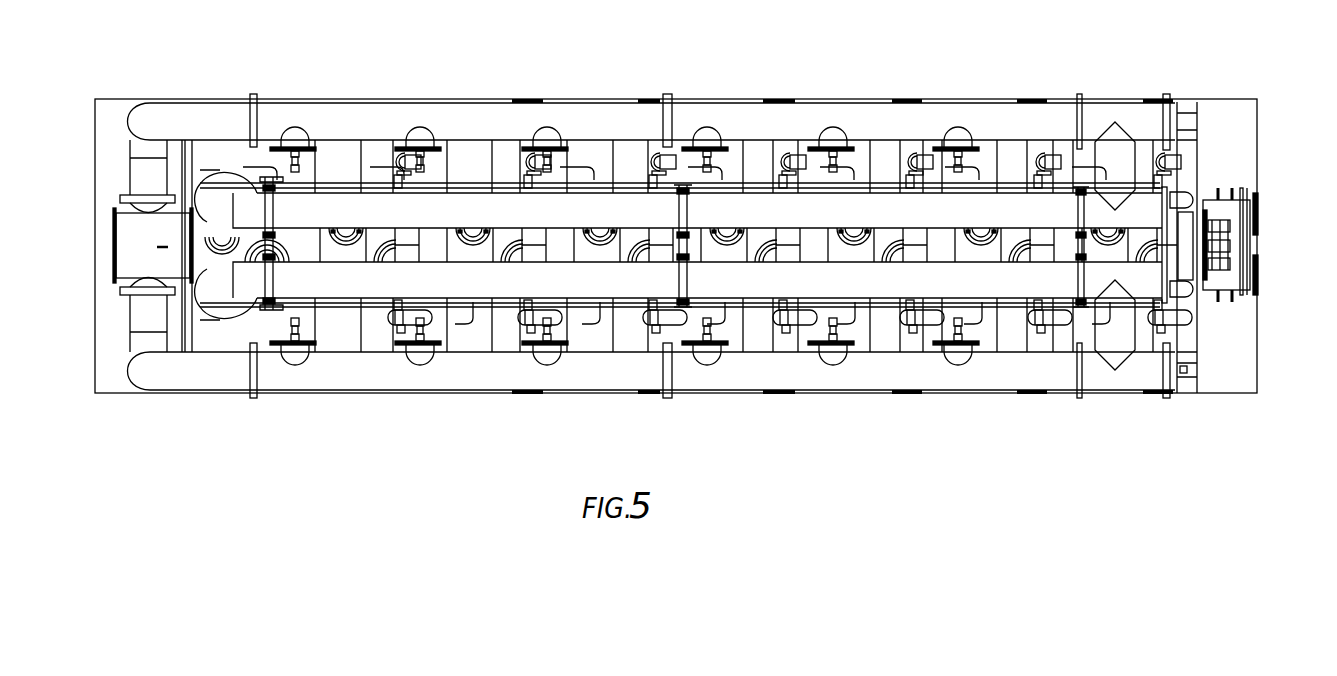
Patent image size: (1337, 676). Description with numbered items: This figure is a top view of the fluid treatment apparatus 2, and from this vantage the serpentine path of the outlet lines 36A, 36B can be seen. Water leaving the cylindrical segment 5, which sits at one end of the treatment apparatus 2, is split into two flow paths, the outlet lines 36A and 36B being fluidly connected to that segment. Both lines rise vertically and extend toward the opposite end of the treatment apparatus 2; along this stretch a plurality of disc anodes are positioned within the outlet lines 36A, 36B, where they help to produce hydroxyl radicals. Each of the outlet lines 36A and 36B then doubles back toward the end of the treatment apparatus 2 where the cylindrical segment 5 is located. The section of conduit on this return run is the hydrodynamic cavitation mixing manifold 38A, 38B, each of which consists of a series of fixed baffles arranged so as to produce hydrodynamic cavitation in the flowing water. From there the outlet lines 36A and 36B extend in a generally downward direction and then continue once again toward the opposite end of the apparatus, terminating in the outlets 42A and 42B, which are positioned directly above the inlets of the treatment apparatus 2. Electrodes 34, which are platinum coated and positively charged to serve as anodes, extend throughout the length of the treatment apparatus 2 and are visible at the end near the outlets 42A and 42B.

The treatment apparatus 2 is at (413, 58).
The cylindrical segment 5 is at (135, 254).
The electrodes 34 is at (1220, 220).
The outlet line 36A is at (722, 118).
The outlet line 36B is at (747, 373).
The hydrodynamic cavitation mixing manifold 38A is at (812, 222).
The hydrodynamic cavitation mixing manifold 38B is at (800, 290).
The outlet 42A is at (1258, 208).
The outlet 42B is at (1258, 280).